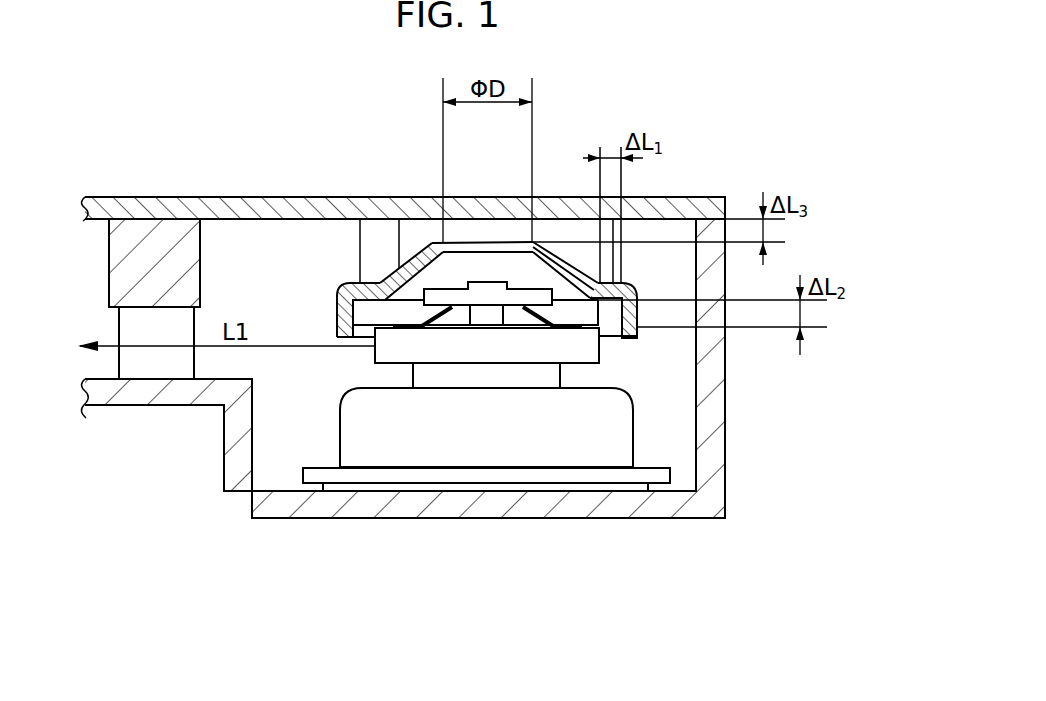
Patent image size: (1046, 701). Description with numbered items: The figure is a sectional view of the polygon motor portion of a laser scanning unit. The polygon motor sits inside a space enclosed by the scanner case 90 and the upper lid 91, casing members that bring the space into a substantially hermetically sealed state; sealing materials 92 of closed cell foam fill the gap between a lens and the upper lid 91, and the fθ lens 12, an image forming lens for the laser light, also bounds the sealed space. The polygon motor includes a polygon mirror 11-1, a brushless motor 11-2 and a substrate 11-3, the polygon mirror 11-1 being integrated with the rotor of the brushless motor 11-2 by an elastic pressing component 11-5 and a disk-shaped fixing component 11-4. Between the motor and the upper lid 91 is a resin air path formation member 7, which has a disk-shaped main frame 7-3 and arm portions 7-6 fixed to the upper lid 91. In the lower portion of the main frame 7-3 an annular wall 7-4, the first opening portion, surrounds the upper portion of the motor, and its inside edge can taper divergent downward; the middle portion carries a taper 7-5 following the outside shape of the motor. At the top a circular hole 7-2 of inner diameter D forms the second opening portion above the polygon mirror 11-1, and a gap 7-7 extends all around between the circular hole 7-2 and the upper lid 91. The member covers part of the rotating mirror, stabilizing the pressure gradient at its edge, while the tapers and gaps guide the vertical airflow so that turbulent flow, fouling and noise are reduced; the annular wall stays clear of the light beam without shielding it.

The air path formation member 7 is at (443, 195).
The circular hole 7-2 is at (513, 245).
The main frame 7-3 is at (337, 308).
The annular wall 7-4 is at (620, 338).
The taper 7-5 is at (416, 236).
The arm portions 7-6 is at (367, 248).
The gap 7-7 is at (553, 240).
The polygon mirror 11-1 is at (585, 352).
The brushless motor 11-2 is at (587, 438).
The substrate 11-3 is at (303, 478).
The disk-shaped fixing component 11-4 is at (455, 292).
The elastic pressing component 11-5 is at (430, 323).
The fθ lens 12 is at (150, 362).
The scanner case 90 is at (707, 505).
The upper lid 91 is at (105, 197).
The sealing materials 92 is at (166, 247).